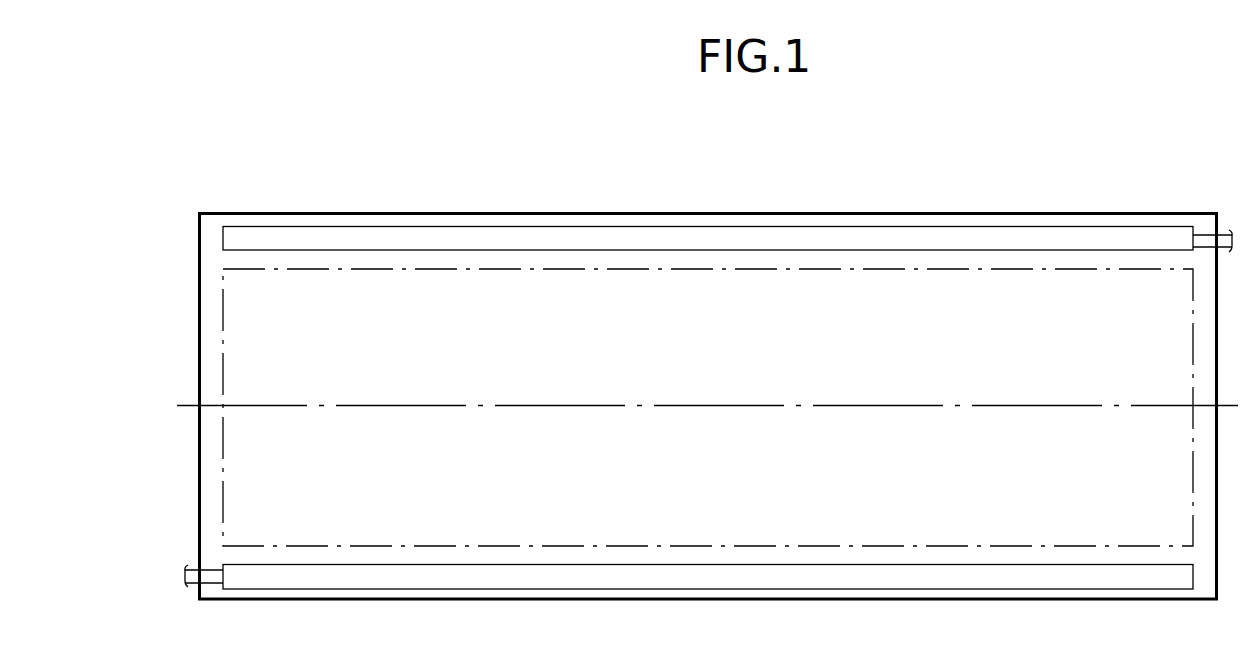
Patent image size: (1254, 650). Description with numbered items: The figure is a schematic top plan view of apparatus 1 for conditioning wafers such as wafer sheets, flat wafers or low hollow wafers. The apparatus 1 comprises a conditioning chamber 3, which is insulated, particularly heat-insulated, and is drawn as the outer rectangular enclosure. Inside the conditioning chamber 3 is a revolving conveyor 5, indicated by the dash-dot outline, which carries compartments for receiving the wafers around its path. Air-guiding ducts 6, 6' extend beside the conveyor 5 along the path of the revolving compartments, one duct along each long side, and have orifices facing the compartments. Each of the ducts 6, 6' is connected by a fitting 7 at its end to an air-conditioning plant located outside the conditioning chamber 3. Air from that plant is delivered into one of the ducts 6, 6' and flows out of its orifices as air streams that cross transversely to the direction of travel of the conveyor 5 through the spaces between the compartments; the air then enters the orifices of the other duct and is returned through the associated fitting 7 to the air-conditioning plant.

The apparatus 1 is at (811, 184).
The conditioning chamber 3 is at (278, 258).
The revolving conveyor 5 is at (470, 312).
The air-guiding duct 6 is at (708, 203).
The air-guiding duct 6' is at (708, 606).
The fitting 7 is at (1222, 240).